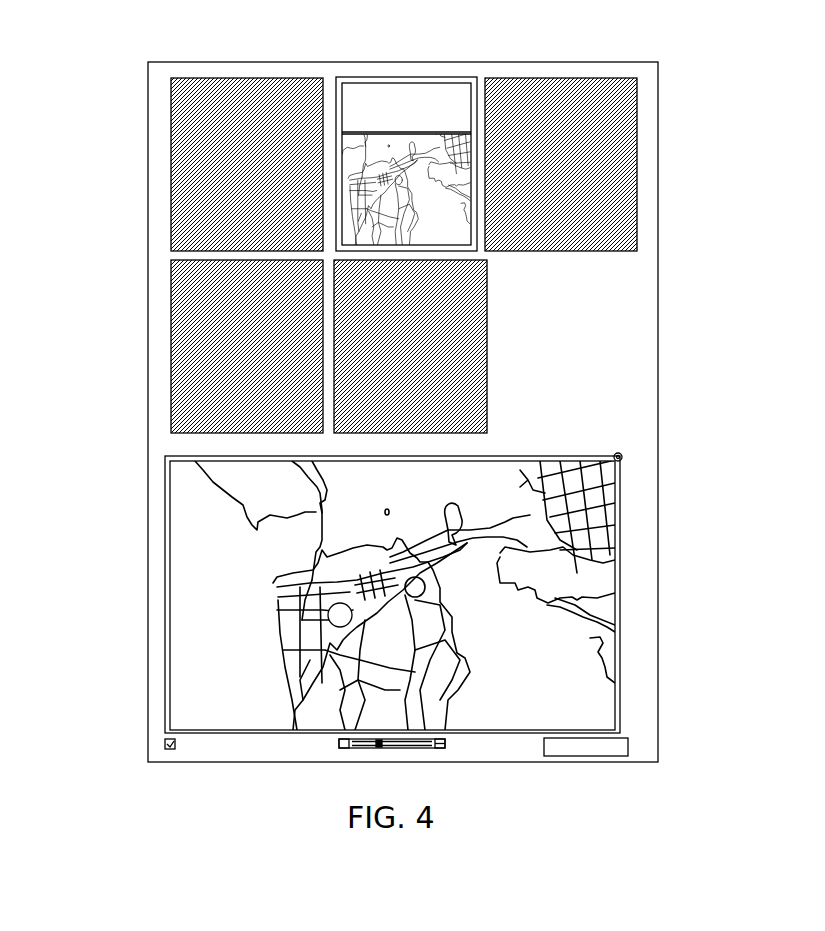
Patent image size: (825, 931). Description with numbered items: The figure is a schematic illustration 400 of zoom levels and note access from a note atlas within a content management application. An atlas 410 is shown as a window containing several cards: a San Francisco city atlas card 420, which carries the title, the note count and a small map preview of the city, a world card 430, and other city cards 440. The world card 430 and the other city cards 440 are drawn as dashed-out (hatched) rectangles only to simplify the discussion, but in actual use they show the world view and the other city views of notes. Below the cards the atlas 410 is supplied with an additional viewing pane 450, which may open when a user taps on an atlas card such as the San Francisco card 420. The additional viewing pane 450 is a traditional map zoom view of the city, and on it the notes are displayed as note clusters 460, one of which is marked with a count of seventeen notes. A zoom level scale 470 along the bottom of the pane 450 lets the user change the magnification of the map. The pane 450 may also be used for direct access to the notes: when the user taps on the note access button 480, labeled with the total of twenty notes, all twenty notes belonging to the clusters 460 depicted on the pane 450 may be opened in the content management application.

The schematic illustration 400 is at (790, 100).
The atlas 410 is at (160, 75).
The San Francisco city atlas card 420 is at (460, 78).
The world card 430 is at (263, 78).
The other city cards 440 is at (600, 78).
The additional viewing pane 450 is at (175, 567).
The note clusters 460 is at (328, 615).
The zoom level scale 470 is at (360, 752).
The note access button 480 is at (637, 748).